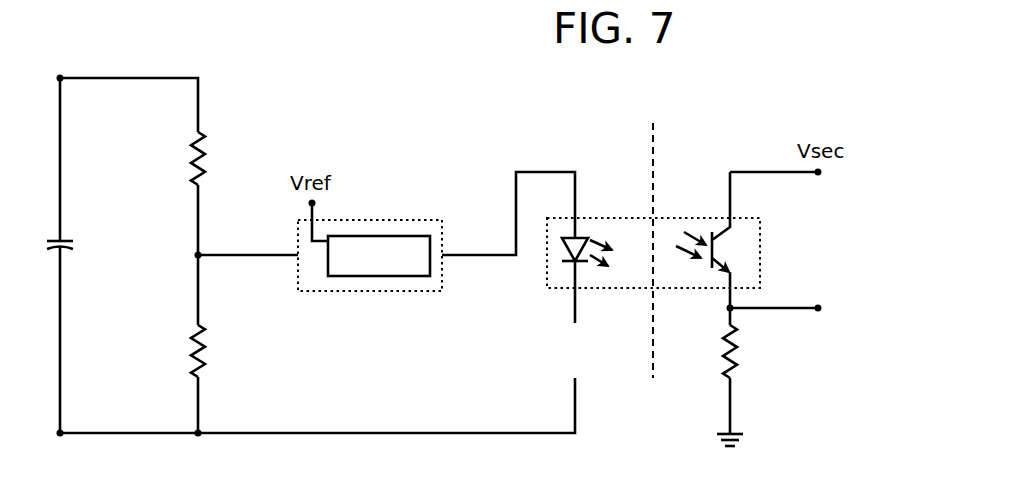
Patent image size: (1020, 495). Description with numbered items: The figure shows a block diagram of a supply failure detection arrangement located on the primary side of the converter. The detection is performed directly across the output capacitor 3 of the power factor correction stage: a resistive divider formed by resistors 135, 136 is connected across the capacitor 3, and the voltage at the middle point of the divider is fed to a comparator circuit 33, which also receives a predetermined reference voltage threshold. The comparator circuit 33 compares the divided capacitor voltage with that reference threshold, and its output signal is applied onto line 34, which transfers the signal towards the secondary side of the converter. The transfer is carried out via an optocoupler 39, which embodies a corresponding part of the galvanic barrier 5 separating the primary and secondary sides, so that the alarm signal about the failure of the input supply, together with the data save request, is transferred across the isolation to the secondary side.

The output capacitor of PFC circuit 3 is at (68, 239).
The resistor 135 is at (207, 167).
The resistor 136 is at (205, 360).
The comparator circuit 33 is at (403, 248).
The galvanic barrier 5 is at (668, 161).
The optocoupler 39 is at (667, 385).
The line 34 is at (778, 312).